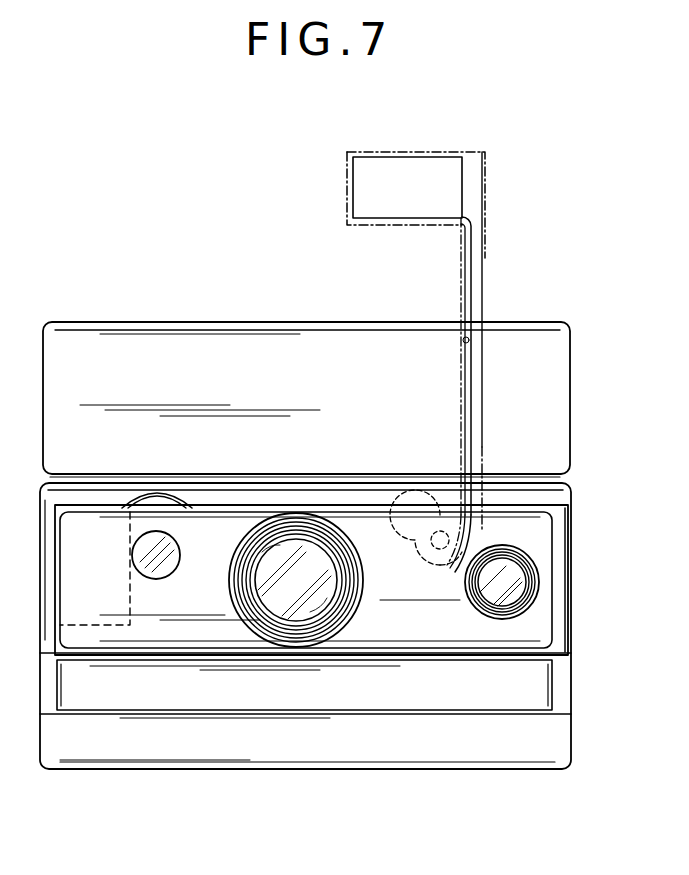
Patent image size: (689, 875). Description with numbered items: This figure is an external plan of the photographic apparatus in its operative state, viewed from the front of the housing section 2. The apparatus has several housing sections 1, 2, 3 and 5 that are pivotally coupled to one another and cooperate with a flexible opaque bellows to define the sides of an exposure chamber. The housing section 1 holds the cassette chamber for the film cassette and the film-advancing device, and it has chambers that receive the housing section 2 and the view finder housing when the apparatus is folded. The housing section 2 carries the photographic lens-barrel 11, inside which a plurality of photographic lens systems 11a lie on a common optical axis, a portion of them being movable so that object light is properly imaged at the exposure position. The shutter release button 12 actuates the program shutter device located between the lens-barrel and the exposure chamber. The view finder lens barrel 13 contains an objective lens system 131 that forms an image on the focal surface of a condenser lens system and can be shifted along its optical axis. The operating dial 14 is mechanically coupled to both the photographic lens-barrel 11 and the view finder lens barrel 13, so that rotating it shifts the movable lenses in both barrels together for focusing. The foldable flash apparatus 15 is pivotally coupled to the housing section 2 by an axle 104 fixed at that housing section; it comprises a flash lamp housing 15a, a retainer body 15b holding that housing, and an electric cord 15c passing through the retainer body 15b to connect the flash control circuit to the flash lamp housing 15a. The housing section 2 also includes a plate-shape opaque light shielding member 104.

The housing section 1 is at (548, 742).
The housing section 2 is at (545, 541).
The housing section 3 is at (560, 587).
The housing section 5 is at (172, 345).
The photographic lens-barrel 11 is at (319, 580).
The photographic lens systems 11a is at (318, 575).
The shutter release button 12 is at (171, 576).
The view finder lens barrel 13 is at (536, 625).
The objective lens system 131 is at (503, 606).
The operating dial 14 is at (167, 493).
The foldable flash apparatus 15 is at (442, 362).
The flash lamp housing 15a is at (392, 210).
The retainer body 15b is at (478, 360).
The electric cord 15c is at (468, 338).
The axle 104 is at (440, 545).